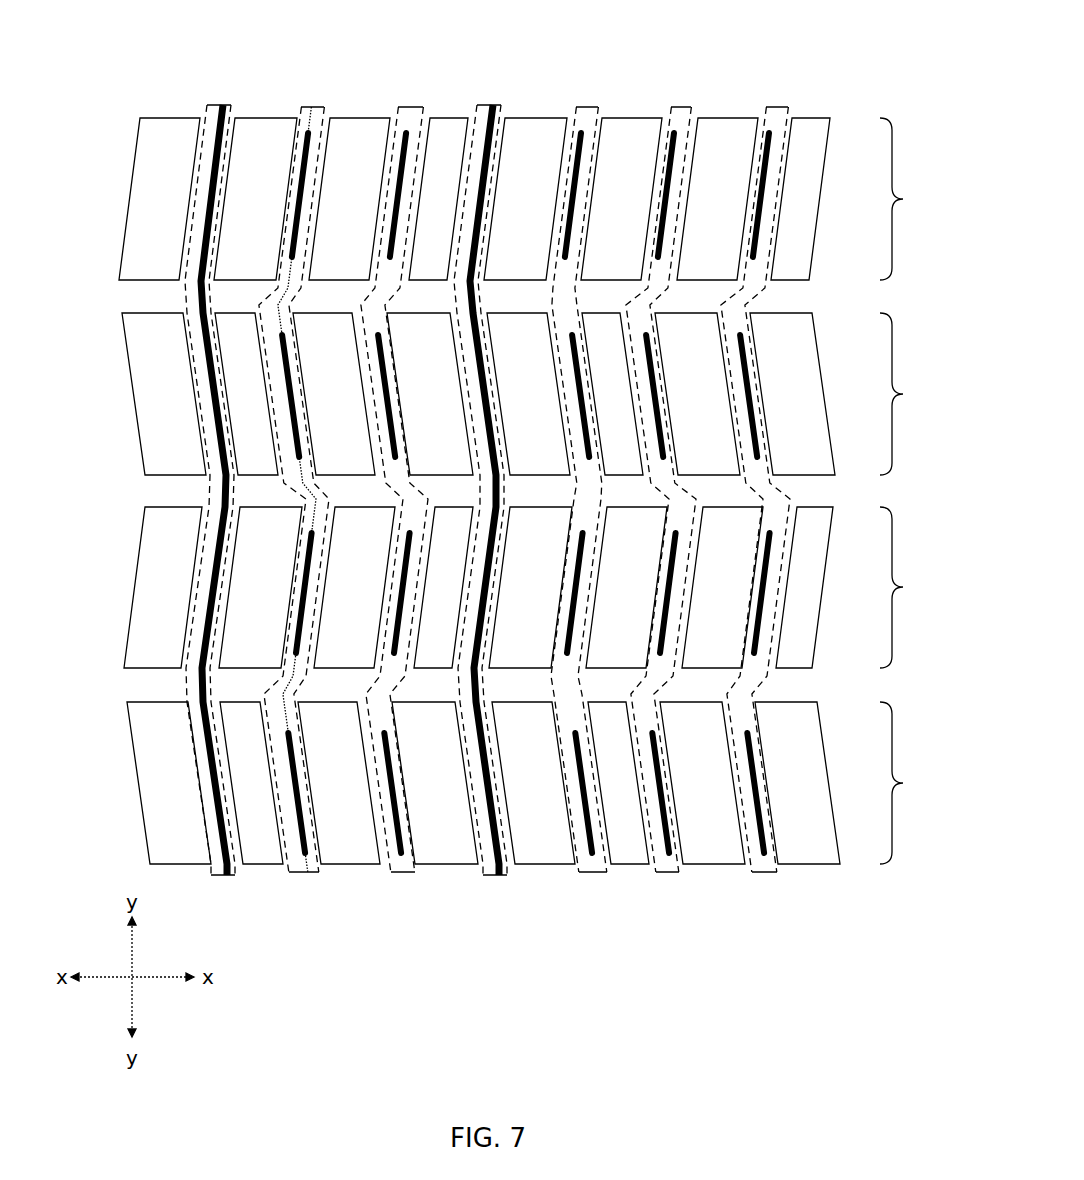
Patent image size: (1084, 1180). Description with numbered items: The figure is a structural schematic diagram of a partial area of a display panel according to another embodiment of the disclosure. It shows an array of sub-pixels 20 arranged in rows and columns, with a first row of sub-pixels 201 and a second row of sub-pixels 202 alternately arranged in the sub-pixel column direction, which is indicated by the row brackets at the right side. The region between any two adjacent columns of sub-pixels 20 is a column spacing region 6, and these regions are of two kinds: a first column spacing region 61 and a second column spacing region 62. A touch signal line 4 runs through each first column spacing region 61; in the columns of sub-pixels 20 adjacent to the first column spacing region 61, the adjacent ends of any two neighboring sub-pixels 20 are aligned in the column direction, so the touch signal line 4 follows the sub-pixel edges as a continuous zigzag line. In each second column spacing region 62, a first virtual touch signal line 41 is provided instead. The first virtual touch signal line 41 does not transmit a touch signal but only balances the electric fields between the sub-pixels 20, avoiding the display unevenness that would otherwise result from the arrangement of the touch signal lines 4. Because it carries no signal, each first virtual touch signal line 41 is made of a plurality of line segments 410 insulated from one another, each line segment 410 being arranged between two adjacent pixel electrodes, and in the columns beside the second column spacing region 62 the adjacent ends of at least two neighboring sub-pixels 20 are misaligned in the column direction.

The touch signal line 4 is at (225, 118).
The column spacing region 6 is at (479, 510).
The first column spacing region 61 is at (208, 115).
The second column spacing region 62 is at (300, 873).
The first virtual touch signal line 41 is at (312, 125).
The line segment 410 is at (768, 205).
The sub-pixel 20 is at (134, 618).
The first row of sub-pixels 201 is at (917, 393).
The second row of sub-pixels 202 is at (917, 588).